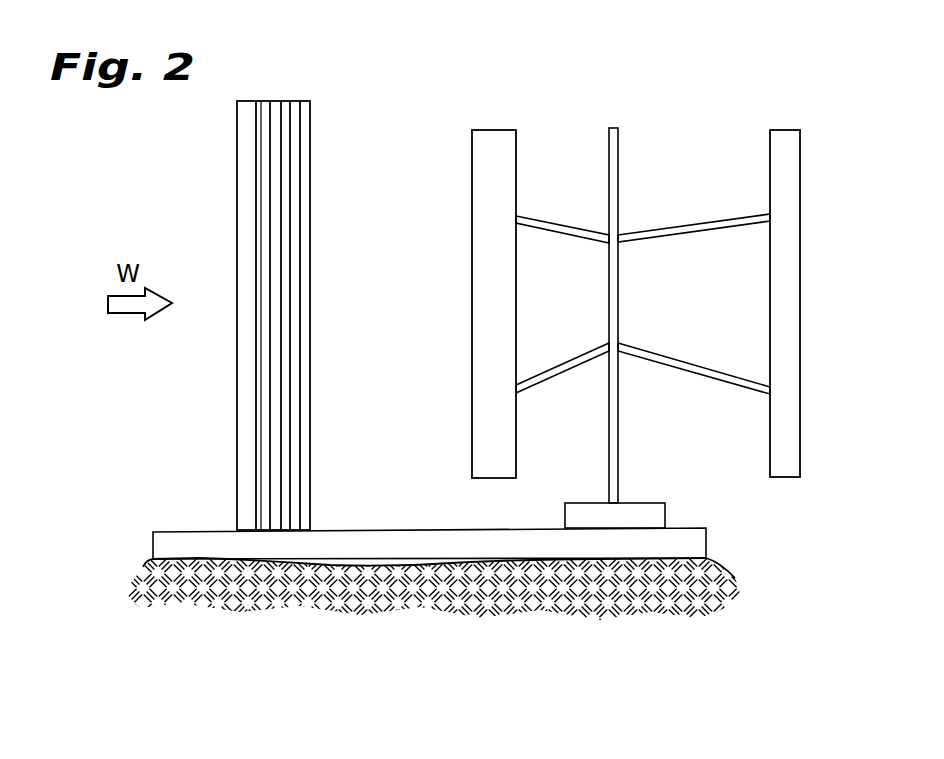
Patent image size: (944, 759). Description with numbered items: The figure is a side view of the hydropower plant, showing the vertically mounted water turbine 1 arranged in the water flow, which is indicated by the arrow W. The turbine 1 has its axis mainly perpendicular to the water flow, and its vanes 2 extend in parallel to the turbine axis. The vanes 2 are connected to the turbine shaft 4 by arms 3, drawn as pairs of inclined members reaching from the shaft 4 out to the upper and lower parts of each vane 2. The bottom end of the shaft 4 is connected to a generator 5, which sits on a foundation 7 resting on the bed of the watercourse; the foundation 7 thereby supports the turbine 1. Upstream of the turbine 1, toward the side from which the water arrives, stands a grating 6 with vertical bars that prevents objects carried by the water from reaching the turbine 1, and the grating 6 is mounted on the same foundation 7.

The water turbine 1 is at (692, 77).
The vanes 2 is at (487, 152).
The arms 3 is at (712, 225).
The turbine shaft 4 is at (608, 150).
The generator 5 is at (645, 517).
The grating 6 is at (292, 120).
The foundation 7 is at (188, 545).